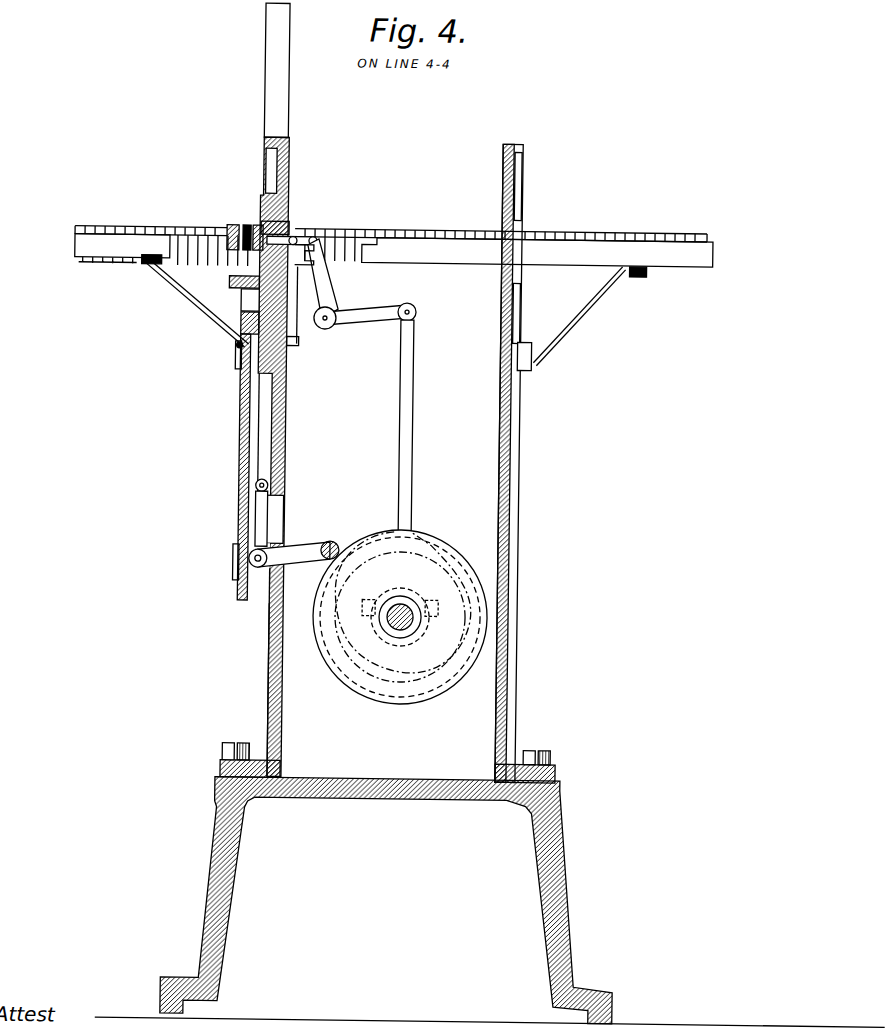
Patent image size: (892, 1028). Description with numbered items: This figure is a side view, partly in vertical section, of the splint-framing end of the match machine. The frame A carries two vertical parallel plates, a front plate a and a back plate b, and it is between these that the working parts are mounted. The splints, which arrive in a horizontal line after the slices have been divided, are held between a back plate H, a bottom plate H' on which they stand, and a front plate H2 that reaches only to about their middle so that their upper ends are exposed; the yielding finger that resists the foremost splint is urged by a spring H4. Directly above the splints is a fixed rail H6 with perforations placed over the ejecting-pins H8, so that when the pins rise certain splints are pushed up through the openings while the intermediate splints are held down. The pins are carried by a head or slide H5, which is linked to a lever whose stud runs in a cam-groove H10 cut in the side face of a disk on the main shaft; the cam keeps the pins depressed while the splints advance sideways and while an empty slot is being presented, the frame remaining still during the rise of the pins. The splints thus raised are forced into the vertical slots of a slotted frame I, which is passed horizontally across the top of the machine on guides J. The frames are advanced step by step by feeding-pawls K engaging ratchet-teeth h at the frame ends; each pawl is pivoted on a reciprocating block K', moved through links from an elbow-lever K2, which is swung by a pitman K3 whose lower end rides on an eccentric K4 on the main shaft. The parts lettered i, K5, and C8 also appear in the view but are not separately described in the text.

The frame A is at (244, 105).
The front plate a is at (297, 430).
The back plate b is at (494, 437).
The slotted frame I is at (391, 223).
The ratchet-teeth h is at (394, 223).
The guides J is at (394, 250).
The teeth i is at (341, 251).
The reciprocating block K' is at (284, 215).
The feeding-pawl K is at (292, 227).
The elbow-lever K2 is at (318, 272).
The rocker lever K5 is at (365, 316).
The pitman K3 is at (410, 451).
The eccentric K4 is at (414, 597).
The back plate H is at (295, 305).
The bottom plate H' is at (238, 300).
The front plate H2 is at (225, 282).
The spring H4 is at (294, 523).
The head or slide H5 is at (240, 341).
The fixed rail H6 is at (304, 259).
The ejecting-pins H8 is at (237, 323).
The cam-groove H10 is at (354, 678).
The null C8 is at (410, 630).